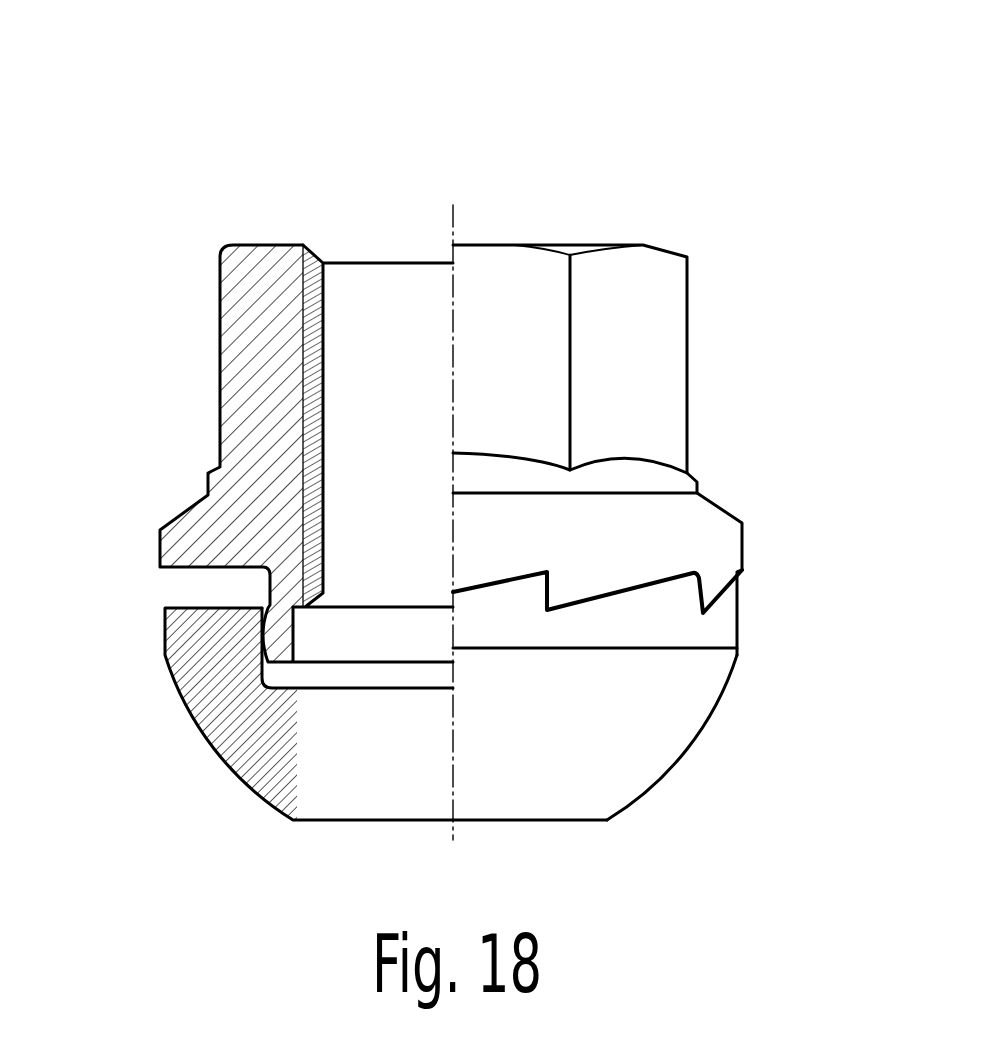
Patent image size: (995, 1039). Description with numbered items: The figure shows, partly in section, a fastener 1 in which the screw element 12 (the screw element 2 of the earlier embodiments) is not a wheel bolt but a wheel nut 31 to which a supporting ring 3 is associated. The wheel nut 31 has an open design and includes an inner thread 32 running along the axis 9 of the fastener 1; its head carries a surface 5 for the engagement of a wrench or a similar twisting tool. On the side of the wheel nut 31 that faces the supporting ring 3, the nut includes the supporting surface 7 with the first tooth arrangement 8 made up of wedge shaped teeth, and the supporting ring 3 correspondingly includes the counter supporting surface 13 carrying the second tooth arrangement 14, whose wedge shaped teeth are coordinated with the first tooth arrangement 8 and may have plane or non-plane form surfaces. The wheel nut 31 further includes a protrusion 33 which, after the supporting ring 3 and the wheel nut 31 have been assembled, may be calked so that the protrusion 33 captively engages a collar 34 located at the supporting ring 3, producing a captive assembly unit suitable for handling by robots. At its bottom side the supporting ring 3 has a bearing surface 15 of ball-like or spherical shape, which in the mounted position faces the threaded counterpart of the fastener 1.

The fastener 1 is at (544, 143).
The screw element 2 is at (640, 268).
The wheel nut 31 is at (640, 268).
The surface 5 is at (657, 294).
The axis 9 is at (457, 399).
The supporting surface 7 is at (668, 527).
The first tooth arrangement 8 is at (668, 527).
The counter supporting surface 13 is at (668, 623).
The second tooth arrangement 14 is at (650, 590).
The supporting ring 3 is at (429, 715).
The bearing surface 15 is at (692, 752).
The screw element 12 is at (429, 715).
The inner thread 32 is at (316, 336).
The protrusion 33 is at (264, 641).
The collar 34 is at (254, 618).